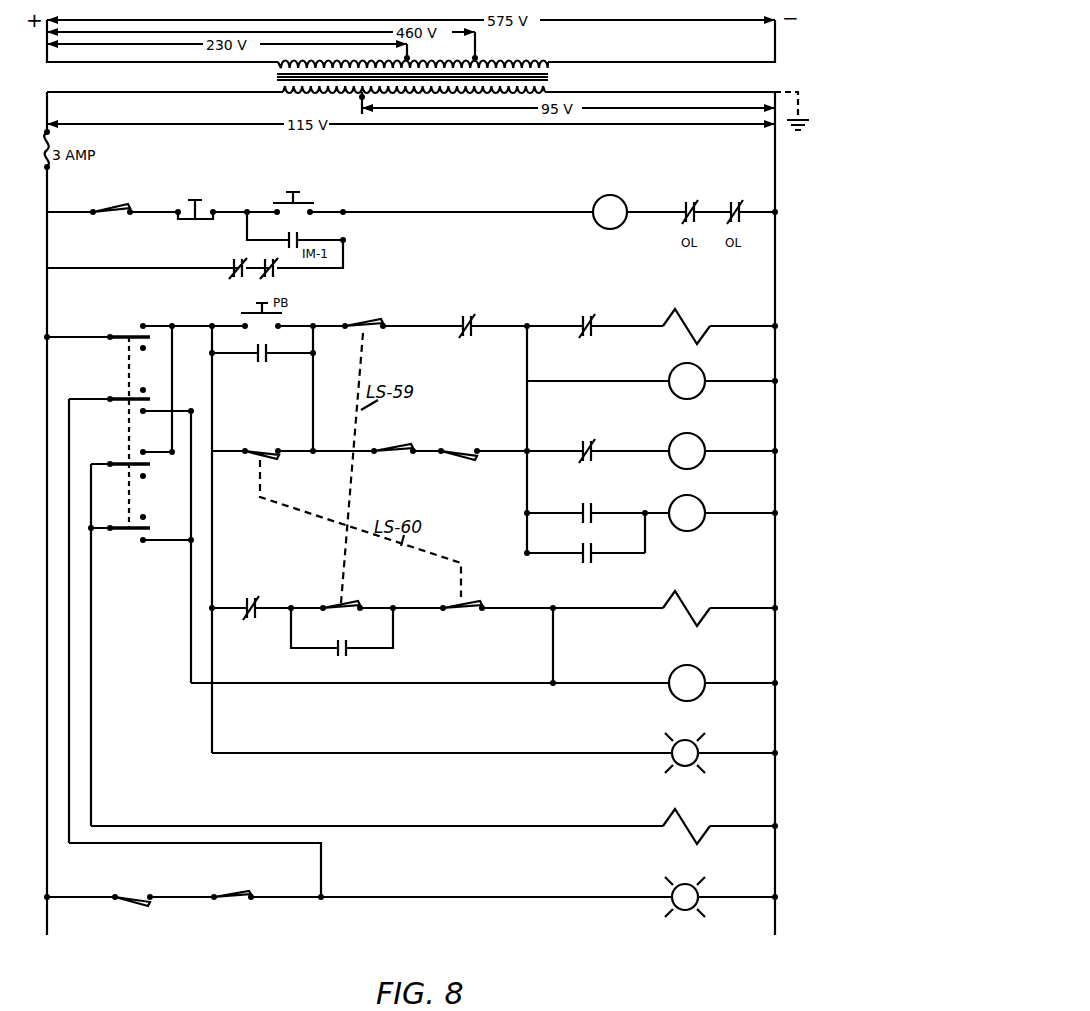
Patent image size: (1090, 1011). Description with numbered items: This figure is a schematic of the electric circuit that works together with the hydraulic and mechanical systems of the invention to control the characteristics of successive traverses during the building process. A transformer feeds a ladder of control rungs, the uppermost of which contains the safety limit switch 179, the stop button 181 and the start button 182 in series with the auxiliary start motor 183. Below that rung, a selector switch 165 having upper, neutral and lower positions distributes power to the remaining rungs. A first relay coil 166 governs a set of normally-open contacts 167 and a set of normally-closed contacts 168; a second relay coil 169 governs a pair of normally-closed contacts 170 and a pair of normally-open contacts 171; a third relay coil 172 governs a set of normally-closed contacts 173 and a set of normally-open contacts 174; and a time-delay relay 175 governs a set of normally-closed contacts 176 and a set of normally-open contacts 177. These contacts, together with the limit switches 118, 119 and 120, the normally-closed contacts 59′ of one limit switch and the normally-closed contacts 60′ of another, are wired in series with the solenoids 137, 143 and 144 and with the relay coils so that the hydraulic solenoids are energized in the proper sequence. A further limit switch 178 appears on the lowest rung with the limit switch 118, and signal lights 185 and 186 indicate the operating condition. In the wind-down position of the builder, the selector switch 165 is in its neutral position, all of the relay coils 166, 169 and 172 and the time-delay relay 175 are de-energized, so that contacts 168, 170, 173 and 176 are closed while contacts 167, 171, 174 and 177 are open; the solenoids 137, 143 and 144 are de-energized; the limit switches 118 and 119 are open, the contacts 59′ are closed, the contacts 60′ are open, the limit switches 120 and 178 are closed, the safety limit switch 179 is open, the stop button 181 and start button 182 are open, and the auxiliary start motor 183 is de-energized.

The safety limit switch 179 is at (118, 206).
The stop button 181 is at (208, 221).
The start button 182 is at (315, 200).
The auxiliary start motor 183 is at (625, 197).
The selector switch 165 is at (97, 357).
The normally-open contacts 167 is at (273, 361).
The normally-closed contacts 59′ is at (381, 323).
The normally-closed contacts 170 is at (470, 333).
The normally-closed contacts 176 is at (596, 324).
The solenoid 144 is at (697, 334).
The first relay coil 166 is at (703, 382).
The limit switch 120 is at (402, 448).
The limit switch 119 is at (448, 459).
The normally-closed contacts 173 is at (594, 450).
The time-delay relay 175 is at (701, 450).
The normally-open contacts 174 is at (596, 512).
The third relay coil 172 is at (702, 515).
The normally-open contacts 177 is at (593, 555).
The normally-closed contacts 168 is at (260, 616).
The normally-open contacts 171 is at (334, 655).
The normally-closed contacts 60′ is at (483, 606).
The solenoid 143 is at (692, 620).
The second relay coil 169 is at (702, 673).
The signal light 186 is at (670, 764).
The solenoid 137 is at (668, 812).
The signal light 185 is at (670, 906).
The limit switch 178 is at (150, 895).
The limit switch 118 is at (248, 893).